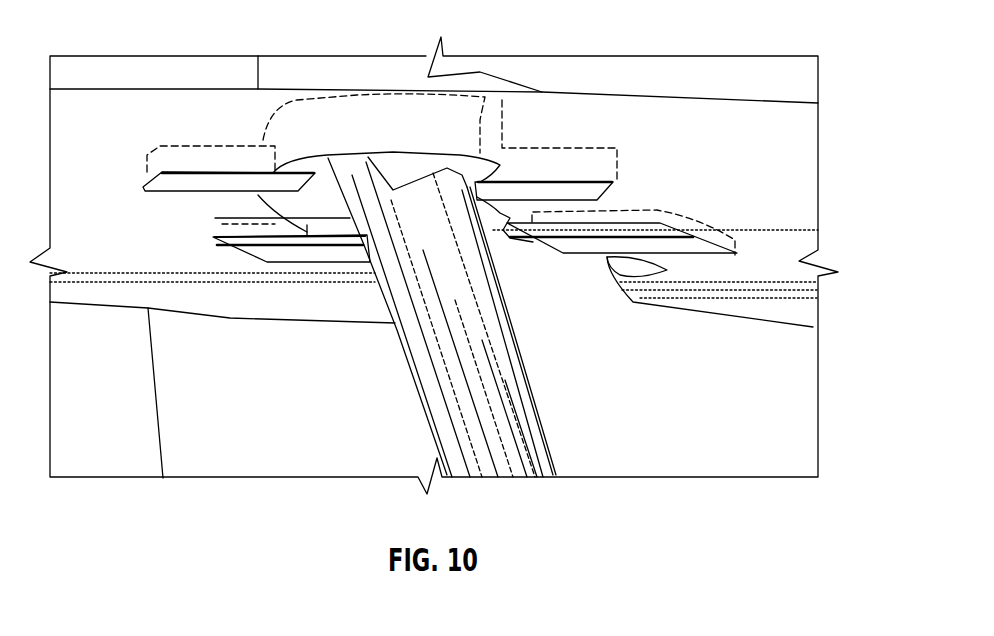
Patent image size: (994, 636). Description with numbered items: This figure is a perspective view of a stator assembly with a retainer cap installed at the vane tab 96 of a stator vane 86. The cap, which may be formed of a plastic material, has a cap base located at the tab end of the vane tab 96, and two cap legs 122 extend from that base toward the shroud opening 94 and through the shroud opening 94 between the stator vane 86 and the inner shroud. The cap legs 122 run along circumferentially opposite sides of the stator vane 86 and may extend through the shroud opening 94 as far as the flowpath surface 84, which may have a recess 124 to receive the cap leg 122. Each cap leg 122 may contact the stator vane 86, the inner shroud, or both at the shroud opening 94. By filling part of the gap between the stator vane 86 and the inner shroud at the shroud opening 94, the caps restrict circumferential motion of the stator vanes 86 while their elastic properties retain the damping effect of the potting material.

The flowpath surface 84 is at (777, 257).
The stator vane 86 is at (760, 398).
The shroud opening 94 is at (330, 205).
The vane tab 96 is at (409, 285).
The cap leg 122 is at (217, 178).
The recess 124 is at (247, 172).